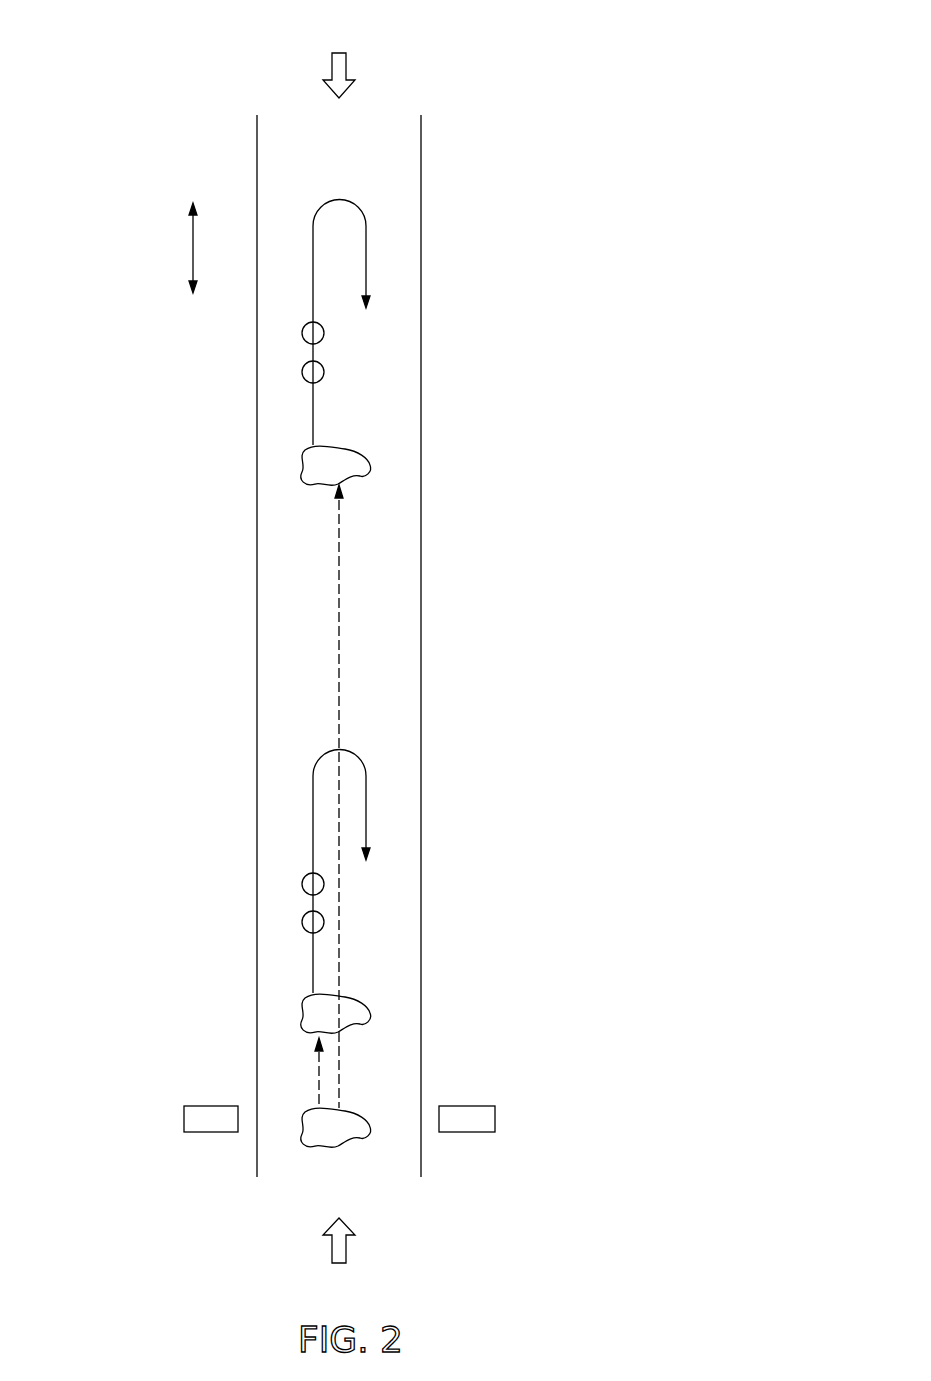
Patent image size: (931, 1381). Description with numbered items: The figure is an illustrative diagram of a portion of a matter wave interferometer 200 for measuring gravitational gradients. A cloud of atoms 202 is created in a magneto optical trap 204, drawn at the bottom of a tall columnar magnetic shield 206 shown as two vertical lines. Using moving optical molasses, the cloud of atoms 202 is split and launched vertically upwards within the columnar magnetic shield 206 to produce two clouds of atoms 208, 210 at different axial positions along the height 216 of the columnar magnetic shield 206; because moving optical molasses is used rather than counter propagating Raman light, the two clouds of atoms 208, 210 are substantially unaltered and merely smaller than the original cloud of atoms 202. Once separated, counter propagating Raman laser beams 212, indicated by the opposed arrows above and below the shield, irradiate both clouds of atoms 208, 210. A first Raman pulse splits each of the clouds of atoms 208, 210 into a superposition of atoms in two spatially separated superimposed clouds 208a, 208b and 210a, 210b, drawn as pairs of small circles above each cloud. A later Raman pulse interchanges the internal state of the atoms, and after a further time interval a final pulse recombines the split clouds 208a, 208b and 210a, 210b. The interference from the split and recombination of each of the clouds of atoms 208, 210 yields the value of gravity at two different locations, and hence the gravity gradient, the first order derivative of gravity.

The matter wave interferometer 200 is at (110, 46).
The cloud of atoms 202 is at (365, 1125).
The magneto optical trap 204 is at (496, 1108).
The columnar magnetic shield 206 is at (257, 803).
The cloud of atoms 208 is at (352, 1012).
The superimposed cloud 208a is at (323, 876).
The superimposed cloud 208b is at (323, 914).
The cloud of atoms 210 is at (370, 463).
The superimposed cloud 210a is at (323, 325).
The superimposed cloud 210b is at (323, 364).
The counter propagating Raman laser beams 212 is at (331, 58).
The height 216 is at (192, 233).